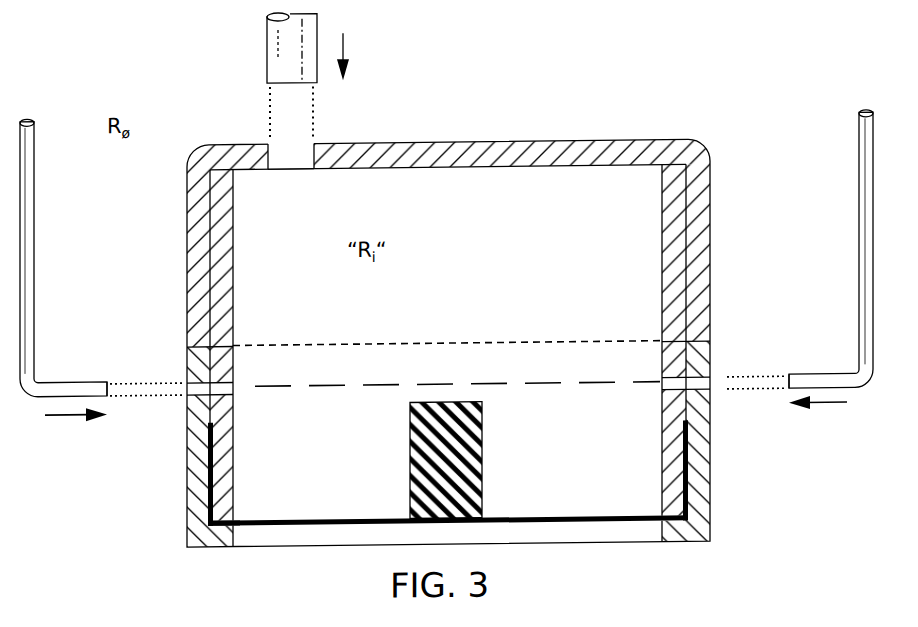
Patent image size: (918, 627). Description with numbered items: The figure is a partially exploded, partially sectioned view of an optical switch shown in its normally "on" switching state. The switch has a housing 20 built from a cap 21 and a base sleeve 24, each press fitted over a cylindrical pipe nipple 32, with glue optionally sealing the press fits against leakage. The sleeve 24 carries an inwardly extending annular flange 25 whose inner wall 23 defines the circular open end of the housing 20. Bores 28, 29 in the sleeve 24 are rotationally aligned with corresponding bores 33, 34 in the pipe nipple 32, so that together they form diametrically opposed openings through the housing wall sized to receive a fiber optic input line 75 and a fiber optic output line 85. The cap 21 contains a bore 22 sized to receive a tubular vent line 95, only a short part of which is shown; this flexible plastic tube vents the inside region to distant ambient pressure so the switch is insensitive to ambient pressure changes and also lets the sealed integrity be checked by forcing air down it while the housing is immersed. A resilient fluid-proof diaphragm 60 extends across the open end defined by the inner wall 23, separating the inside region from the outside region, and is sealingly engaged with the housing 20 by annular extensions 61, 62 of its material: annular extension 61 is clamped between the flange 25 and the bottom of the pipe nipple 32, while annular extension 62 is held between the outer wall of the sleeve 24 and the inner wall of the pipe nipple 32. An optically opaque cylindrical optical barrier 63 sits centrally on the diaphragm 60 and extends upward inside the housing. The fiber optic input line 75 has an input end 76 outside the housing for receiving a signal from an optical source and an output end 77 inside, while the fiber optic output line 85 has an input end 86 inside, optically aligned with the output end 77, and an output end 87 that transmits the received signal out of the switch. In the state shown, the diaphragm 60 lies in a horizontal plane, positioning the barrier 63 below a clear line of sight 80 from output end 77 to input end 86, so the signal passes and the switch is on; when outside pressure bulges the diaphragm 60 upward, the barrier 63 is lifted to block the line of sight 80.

The housing 20 is at (712, 151).
The cap 21 is at (480, 153).
The bore 22 is at (290, 161).
The inner wall 23 is at (660, 535).
The base sleeve 24 is at (197, 483).
The annular flange 25 is at (230, 536).
The bore 28 is at (187, 390).
The bore 29 is at (710, 389).
The pipe nipple 32 is at (662, 285).
The bore 33 is at (233, 389).
The bore 34 is at (662, 385).
The diaphragm 60 is at (523, 520).
The annular extension 61 is at (220, 519).
The annular extension 62 is at (213, 452).
The optical barrier 63 is at (410, 442).
The fiber optic input line 75 is at (34, 219).
The input end 76 is at (28, 118).
The output end 77 is at (115, 381).
The line of sight 80 is at (442, 386).
The fiber optic output line 85 is at (859, 217).
The input end 86 is at (790, 380).
The output end 87 is at (866, 118).
The vent line 95 is at (275, 58).